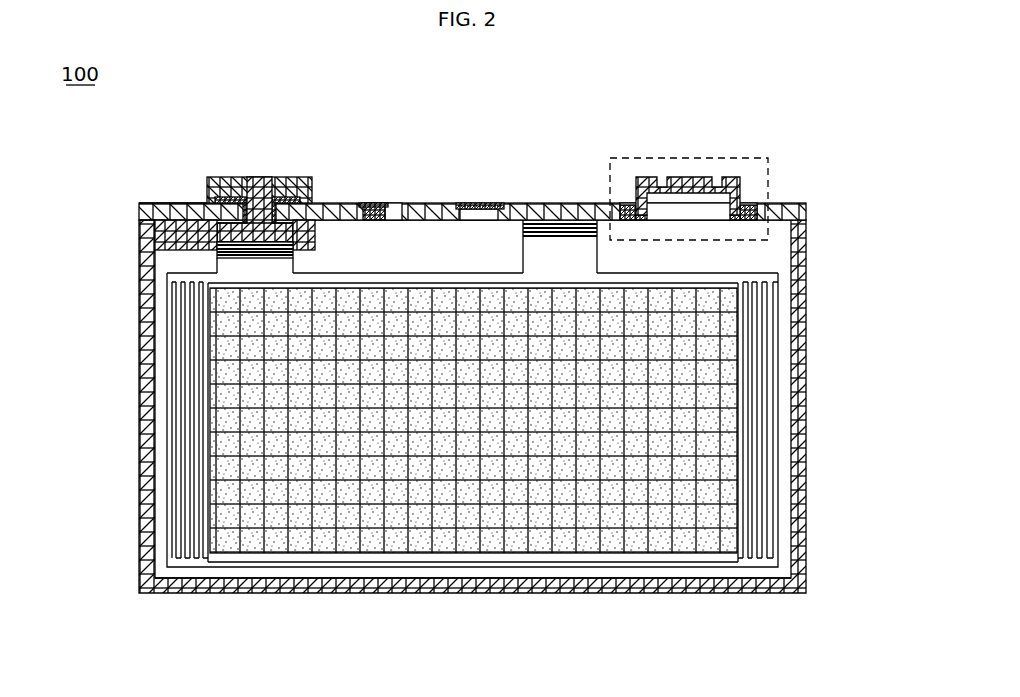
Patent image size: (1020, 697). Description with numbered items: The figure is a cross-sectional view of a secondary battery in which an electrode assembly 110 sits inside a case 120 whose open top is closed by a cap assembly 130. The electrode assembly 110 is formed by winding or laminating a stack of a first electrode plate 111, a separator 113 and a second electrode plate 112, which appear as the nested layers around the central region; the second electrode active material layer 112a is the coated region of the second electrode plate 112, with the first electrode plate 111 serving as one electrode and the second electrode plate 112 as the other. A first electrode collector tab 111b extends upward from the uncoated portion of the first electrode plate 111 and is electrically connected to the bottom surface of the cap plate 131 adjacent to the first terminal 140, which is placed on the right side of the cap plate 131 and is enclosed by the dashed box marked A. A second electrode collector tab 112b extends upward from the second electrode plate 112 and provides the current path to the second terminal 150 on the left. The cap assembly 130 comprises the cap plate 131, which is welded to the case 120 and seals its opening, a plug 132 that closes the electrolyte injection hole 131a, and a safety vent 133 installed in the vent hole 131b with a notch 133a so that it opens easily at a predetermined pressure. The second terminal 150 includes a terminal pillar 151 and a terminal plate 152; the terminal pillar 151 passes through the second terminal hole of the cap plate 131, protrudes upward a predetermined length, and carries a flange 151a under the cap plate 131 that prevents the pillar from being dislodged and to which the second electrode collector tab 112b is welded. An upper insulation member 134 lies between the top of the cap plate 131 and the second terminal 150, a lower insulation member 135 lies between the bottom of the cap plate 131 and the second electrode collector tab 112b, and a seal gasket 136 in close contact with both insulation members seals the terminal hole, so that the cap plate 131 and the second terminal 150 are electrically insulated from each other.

The electrode assembly 110 is at (558, 577).
The first electrode plate 111 is at (750, 329).
The first electrode collector tab 111b is at (597, 261).
The second electrode plate 112 is at (209, 328).
The second electrode active material layer 112a is at (375, 542).
The second electrode collector tab 112b is at (228, 268).
The separator 113 is at (440, 560).
The case 120 is at (798, 388).
The cap assembly 130 is at (533, 132).
The cap plate 131 is at (568, 203).
The electrolyte injection hole 131a is at (386, 212).
The vent hole 131b is at (482, 221).
The plug 132 is at (364, 203).
The safety vent 133 is at (496, 203).
The notch 133a is at (474, 203).
The upper insulation member 134 is at (208, 202).
The lower insulation member 135 is at (168, 229).
The seal gasket 136 is at (178, 203).
The first terminal 140 is at (655, 175).
The second terminal 150 is at (277, 179).
The terminal pillar 151 is at (257, 177).
The flange 151a is at (293, 233).
The terminal plate 152 is at (300, 177).
The region A is at (728, 158).